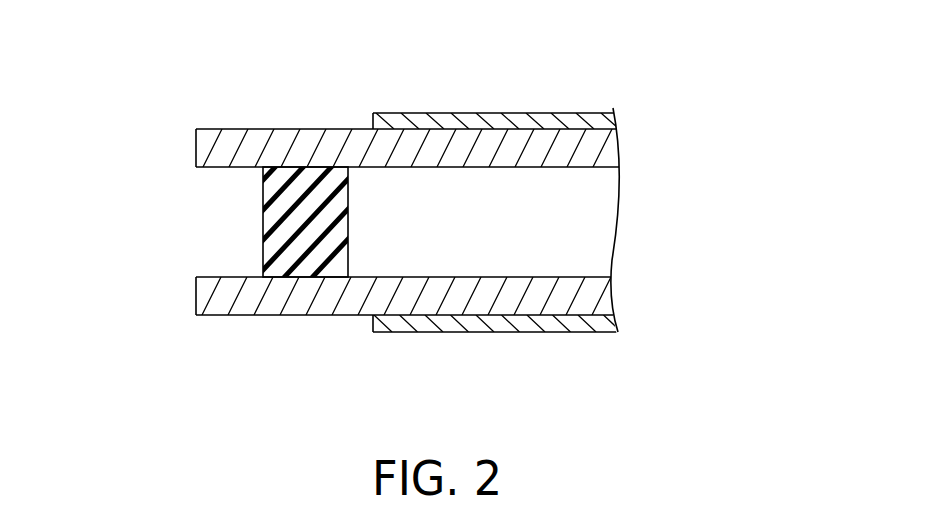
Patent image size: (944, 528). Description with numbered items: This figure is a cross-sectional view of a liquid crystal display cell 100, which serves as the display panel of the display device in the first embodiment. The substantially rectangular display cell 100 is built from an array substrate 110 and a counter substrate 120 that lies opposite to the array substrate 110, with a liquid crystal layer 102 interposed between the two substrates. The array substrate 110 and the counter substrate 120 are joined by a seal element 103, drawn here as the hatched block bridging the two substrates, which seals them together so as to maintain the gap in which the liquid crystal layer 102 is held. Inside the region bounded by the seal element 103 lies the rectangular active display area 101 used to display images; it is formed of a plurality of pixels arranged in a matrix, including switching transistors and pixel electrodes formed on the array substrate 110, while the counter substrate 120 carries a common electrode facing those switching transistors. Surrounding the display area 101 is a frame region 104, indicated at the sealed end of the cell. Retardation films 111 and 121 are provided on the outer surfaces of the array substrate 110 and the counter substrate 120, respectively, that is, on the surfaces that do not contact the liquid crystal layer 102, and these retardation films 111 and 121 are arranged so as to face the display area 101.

The liquid crystal display cell 100 is at (650, 118).
The active display area 101 is at (612, 95).
The liquid crystal layer 102 is at (597, 227).
The seal element 103 is at (270, 225).
The frame region 104 is at (197, 95).
The array substrate 110 is at (210, 297).
The retardation film 111 is at (397, 120).
The counter substrate 120 is at (207, 152).
The retardation film 121 is at (491, 333).